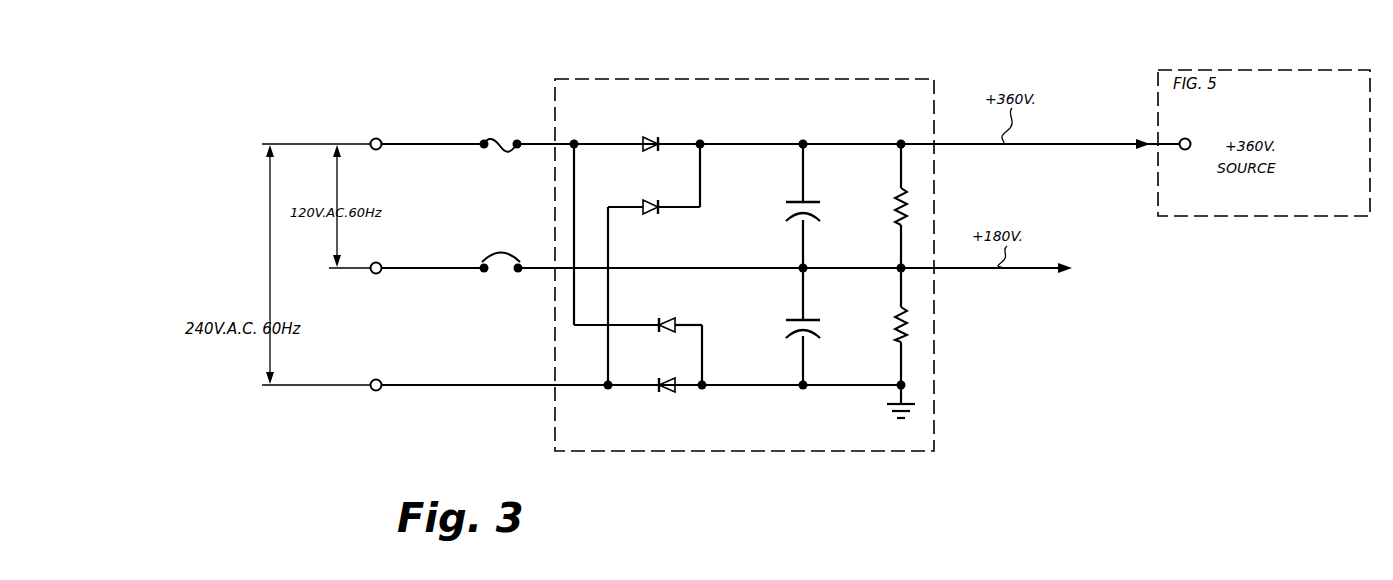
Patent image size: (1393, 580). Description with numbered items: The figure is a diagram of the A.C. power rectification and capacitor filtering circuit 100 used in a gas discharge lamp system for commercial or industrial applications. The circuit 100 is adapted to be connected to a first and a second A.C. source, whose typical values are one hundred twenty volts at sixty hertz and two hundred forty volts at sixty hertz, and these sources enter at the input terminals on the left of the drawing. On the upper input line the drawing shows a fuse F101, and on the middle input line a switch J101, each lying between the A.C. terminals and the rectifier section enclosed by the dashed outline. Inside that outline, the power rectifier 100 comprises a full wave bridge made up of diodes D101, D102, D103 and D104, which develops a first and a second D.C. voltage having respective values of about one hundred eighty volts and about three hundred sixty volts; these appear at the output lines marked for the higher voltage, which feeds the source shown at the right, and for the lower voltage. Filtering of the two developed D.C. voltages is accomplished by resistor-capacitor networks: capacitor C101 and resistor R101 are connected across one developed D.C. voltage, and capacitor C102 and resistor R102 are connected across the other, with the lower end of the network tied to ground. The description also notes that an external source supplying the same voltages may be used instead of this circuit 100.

The A.C. power rectification and capacitor filtering circuit 100 is at (903, 61).
The fuse F101 is at (493, 141).
The switch J101 is at (492, 257).
The diode D101 is at (650, 137).
The diode D102 is at (650, 200).
The diode D103 is at (664, 318).
The diode D104 is at (664, 378).
The capacitor C101 is at (786, 203).
The capacitor C102 is at (786, 321).
The resistor R101 is at (897, 208).
The resistor R102 is at (897, 325).